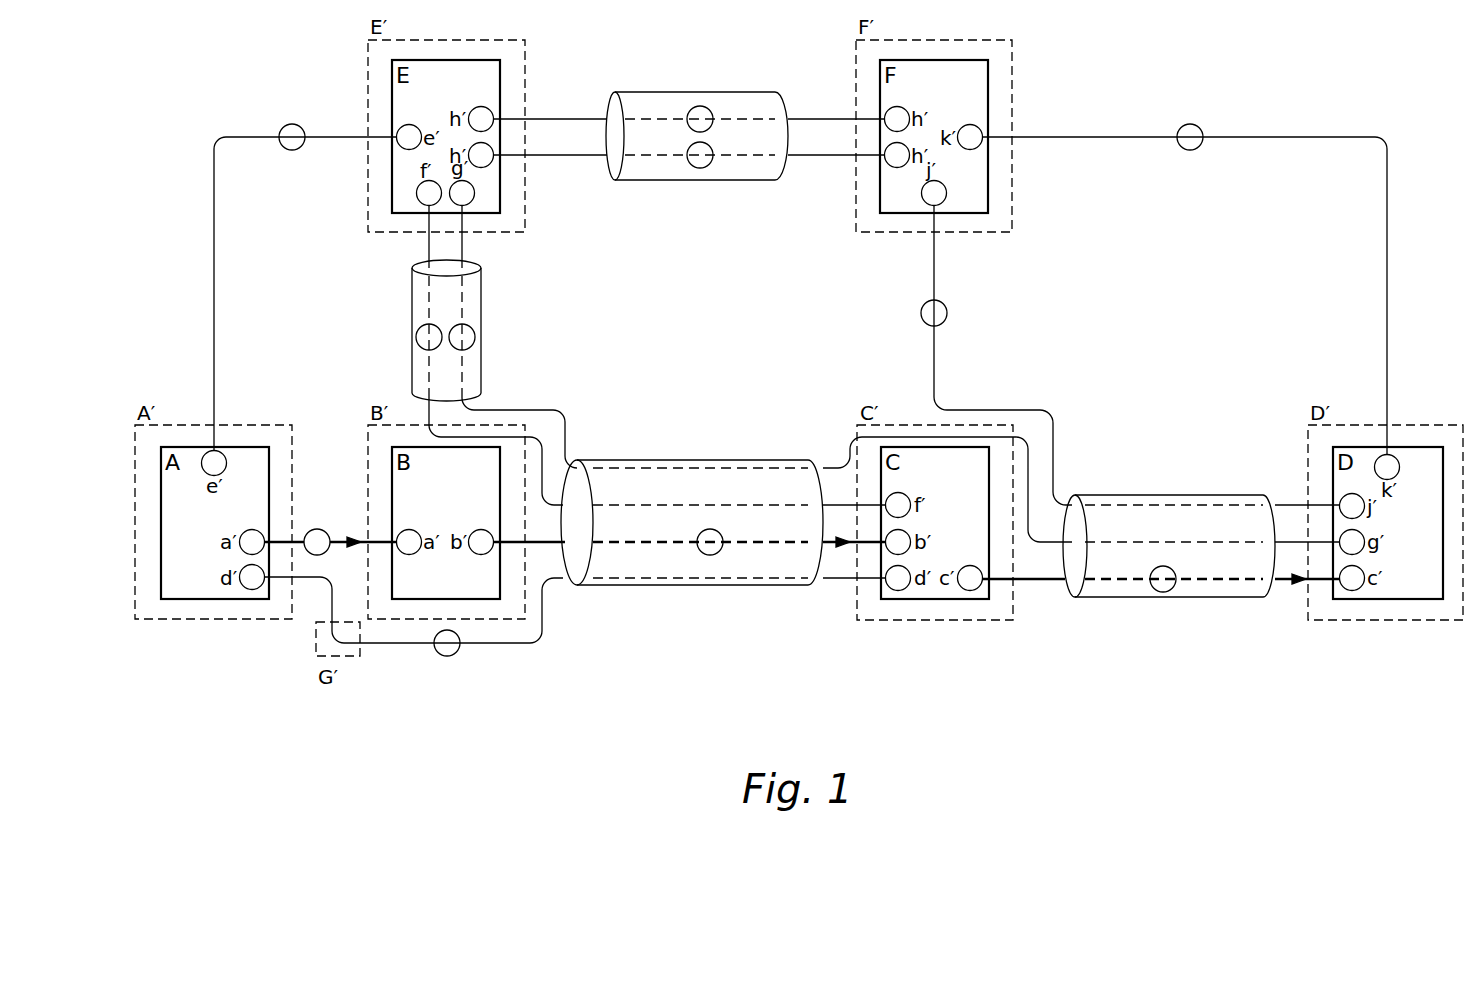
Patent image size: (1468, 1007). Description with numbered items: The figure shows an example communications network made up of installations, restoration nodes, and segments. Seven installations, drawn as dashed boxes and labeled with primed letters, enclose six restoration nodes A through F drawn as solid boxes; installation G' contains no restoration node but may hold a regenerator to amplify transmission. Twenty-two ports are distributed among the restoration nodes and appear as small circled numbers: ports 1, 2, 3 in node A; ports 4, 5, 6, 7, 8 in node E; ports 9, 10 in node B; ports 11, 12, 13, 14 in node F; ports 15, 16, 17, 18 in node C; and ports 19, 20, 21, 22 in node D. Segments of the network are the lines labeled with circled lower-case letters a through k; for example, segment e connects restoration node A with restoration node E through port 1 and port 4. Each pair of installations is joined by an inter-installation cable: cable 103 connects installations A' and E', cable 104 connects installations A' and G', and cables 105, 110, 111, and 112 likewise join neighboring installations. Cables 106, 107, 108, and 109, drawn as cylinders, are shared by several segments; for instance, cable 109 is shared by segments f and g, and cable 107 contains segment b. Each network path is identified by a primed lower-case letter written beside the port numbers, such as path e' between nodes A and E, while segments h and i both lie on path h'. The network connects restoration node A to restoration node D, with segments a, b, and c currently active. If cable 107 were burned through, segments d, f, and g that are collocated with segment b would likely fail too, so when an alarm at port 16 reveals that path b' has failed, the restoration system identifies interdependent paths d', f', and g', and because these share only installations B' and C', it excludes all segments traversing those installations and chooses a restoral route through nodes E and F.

The port 1 is at (214, 463).
The port 2 is at (252, 542).
The port 3 is at (252, 577).
The port 4 is at (409, 137).
The port 5 is at (429, 193).
The port 6 is at (462, 193).
The port 7 is at (481, 155).
The port 8 is at (481, 119).
The port 9 is at (409, 542).
The port 10 is at (481, 542).
The port 11 is at (897, 119).
The port 12 is at (897, 155).
The port 13 is at (934, 193).
The port 14 is at (970, 137).
The port 15 is at (898, 505).
The port 16 is at (898, 542).
The port 17 is at (898, 578).
The port 18 is at (970, 578).
The port 19 is at (1352, 506).
The port 20 is at (1352, 542).
The port 21 is at (1352, 578).
The port 22 is at (1387, 467).
The inter-installation cable 103 is at (214, 290).
The inter-installation cable 104 is at (330, 600).
The inter-installation cable 105 is at (390, 643).
The inter-installation cable 106 is at (695, 92).
The inter-installation cable 107 is at (690, 460).
The inter-installation cable 108 is at (1170, 495).
The inter-installation cable 109 is at (481, 310).
The inter-installation cable 110 is at (1387, 302).
The inter-installation cable 111 is at (343, 538).
The inter-installation cable 112 is at (934, 362).